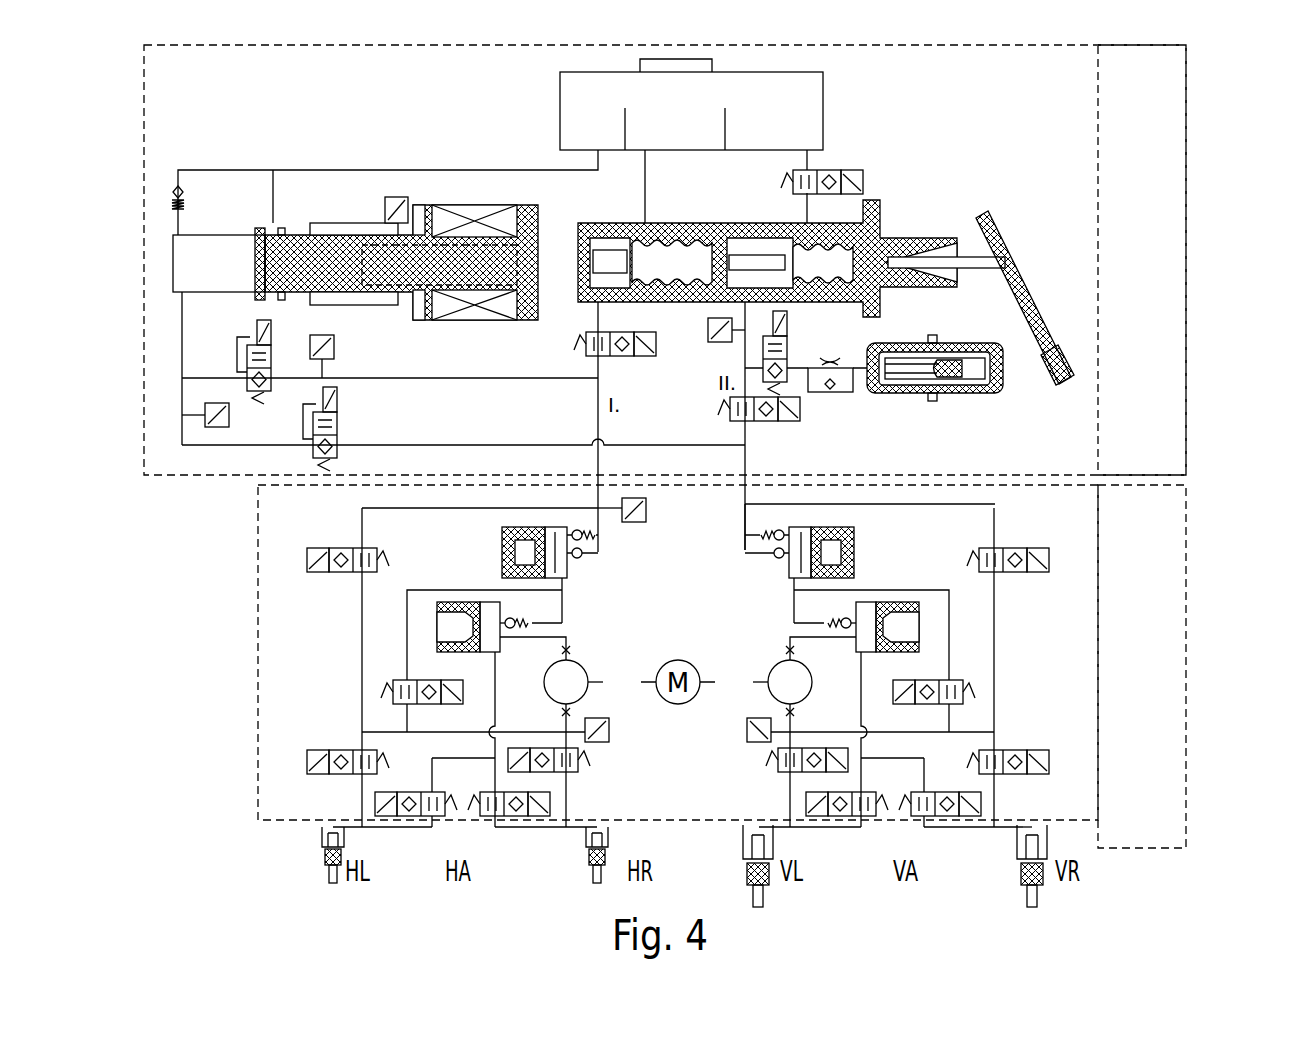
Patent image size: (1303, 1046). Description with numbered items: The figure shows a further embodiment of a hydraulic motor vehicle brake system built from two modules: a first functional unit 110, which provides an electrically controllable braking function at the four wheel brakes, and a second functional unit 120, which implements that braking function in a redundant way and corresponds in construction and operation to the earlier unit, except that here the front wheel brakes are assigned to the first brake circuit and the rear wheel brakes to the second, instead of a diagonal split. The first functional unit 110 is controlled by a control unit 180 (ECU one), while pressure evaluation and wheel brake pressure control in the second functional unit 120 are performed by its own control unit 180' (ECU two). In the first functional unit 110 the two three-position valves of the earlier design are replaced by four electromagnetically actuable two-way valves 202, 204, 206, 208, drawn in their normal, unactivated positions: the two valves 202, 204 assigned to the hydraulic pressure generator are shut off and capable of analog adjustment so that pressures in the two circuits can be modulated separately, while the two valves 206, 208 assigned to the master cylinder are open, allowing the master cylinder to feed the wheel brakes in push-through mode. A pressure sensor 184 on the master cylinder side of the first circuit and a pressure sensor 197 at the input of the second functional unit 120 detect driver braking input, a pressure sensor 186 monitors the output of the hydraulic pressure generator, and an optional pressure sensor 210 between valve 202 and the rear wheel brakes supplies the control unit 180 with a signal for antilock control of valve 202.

The first functional unit 110 is at (143, 248).
The second functional unit 120 is at (257, 546).
The control unit 180 is at (1177, 260).
The control unit 180' is at (1181, 666).
The pressure sensor 184 is at (708, 330).
The pressure sensor 186 is at (229, 418).
The pressure sensor 197 is at (643, 523).
The 2/2-way valve 202 is at (247, 339).
The 2/2-way valve 204 is at (338, 422).
The 2/2-way valve 206 is at (627, 357).
The 2/2-way valve 208 is at (767, 423).
The pressure sensor 210 is at (334, 346).